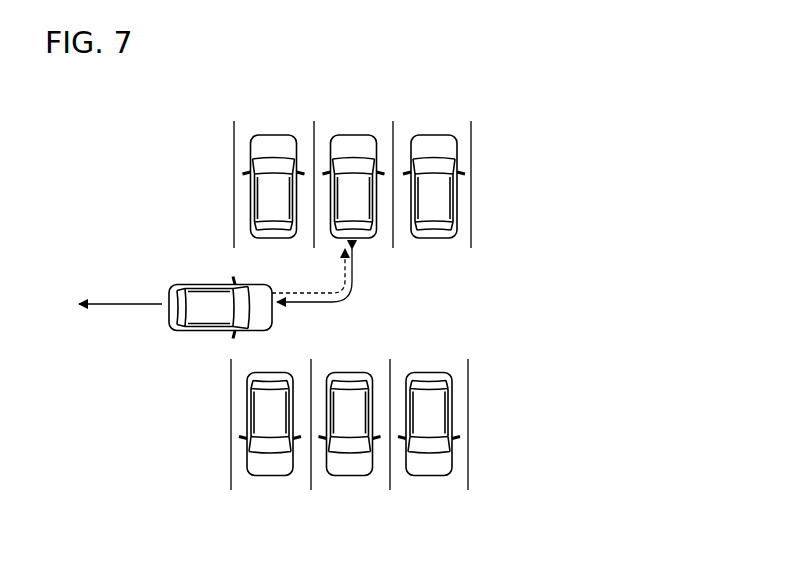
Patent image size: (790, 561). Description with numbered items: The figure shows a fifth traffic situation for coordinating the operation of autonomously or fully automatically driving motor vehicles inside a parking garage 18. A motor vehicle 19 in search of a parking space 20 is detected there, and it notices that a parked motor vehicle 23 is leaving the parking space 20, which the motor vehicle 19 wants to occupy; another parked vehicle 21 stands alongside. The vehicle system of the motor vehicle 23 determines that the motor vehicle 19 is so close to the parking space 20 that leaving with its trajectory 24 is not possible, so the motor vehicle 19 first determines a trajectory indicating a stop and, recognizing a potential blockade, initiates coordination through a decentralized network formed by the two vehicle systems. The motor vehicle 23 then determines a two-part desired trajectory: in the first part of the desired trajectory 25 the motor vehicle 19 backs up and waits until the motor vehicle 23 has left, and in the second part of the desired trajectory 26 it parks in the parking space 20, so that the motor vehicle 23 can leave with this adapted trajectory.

The parking garage 18 is at (452, 291).
The motor vehicle 19 is at (202, 311).
The parking space 20 is at (383, 142).
The parked vehicle 21 is at (435, 145).
The motor vehicle 23 is at (355, 145).
The trajectory 24 is at (353, 277).
The first part of the desired trajectory 25 is at (138, 304).
The second part of the desired trajectory 26 is at (330, 290).